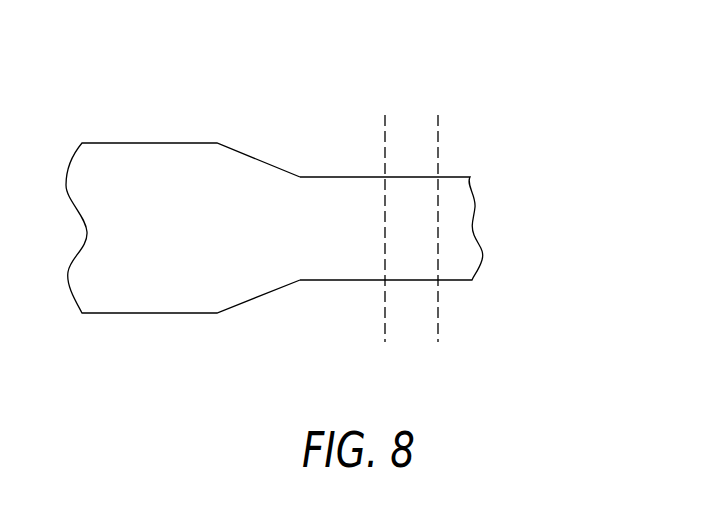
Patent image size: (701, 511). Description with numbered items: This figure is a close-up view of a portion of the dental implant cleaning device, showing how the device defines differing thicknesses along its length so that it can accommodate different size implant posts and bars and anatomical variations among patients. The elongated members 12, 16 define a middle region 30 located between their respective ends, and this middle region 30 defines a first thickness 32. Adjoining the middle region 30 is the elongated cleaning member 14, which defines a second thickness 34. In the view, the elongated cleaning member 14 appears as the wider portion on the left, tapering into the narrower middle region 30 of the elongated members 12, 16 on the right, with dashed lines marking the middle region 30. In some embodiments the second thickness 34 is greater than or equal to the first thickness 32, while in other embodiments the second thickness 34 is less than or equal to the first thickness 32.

The elongated cleaning member 14 is at (97, 133).
The second thickness 34 is at (158, 138).
The middle region 30 is at (408, 125).
The first thickness 32 is at (408, 175).
The first elongated member 12 is at (351, 293).
The second elongated member 16 is at (472, 197).